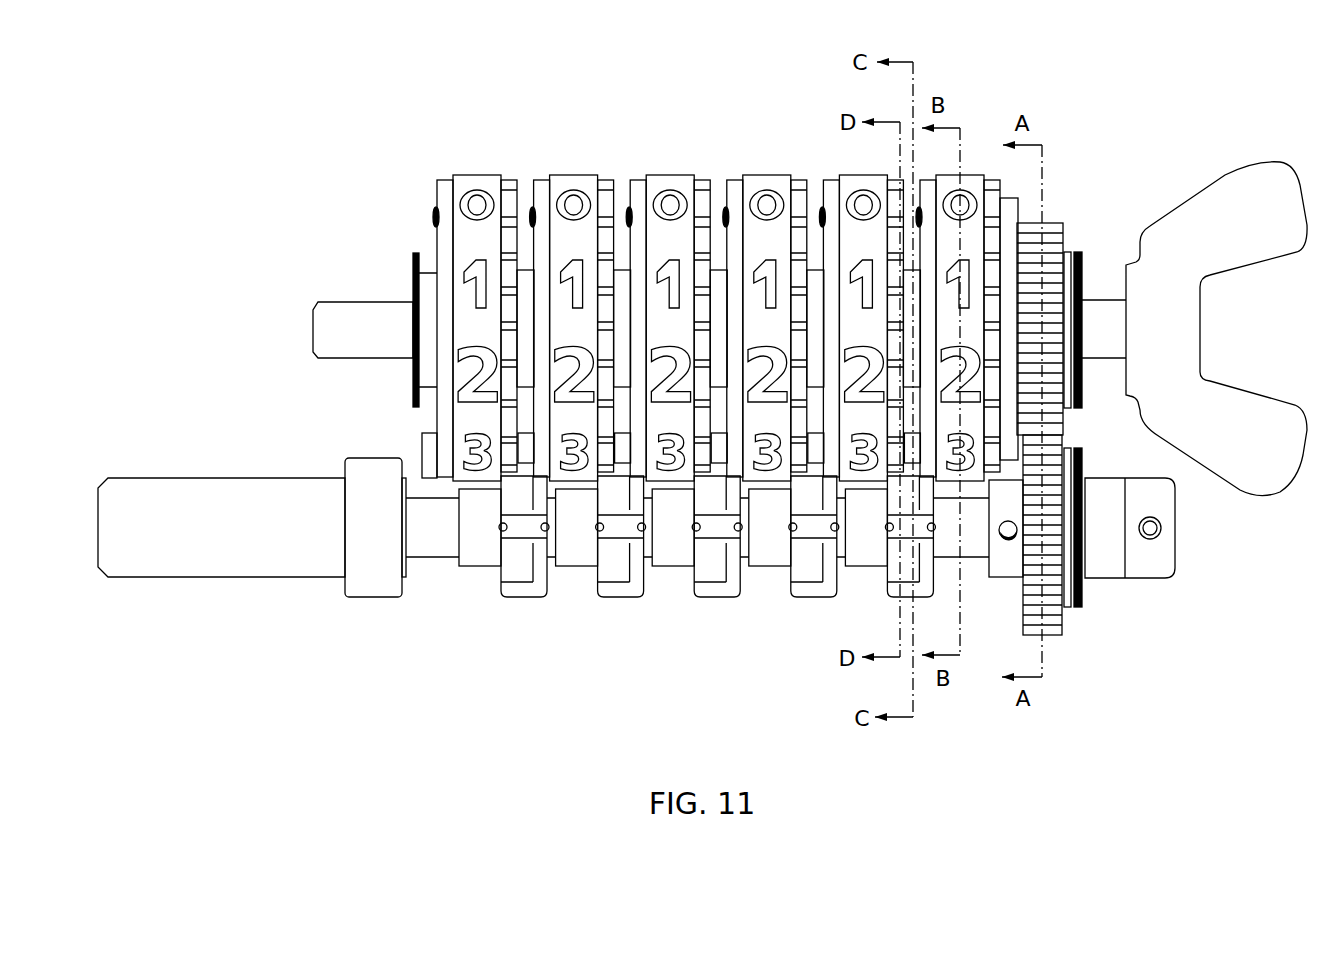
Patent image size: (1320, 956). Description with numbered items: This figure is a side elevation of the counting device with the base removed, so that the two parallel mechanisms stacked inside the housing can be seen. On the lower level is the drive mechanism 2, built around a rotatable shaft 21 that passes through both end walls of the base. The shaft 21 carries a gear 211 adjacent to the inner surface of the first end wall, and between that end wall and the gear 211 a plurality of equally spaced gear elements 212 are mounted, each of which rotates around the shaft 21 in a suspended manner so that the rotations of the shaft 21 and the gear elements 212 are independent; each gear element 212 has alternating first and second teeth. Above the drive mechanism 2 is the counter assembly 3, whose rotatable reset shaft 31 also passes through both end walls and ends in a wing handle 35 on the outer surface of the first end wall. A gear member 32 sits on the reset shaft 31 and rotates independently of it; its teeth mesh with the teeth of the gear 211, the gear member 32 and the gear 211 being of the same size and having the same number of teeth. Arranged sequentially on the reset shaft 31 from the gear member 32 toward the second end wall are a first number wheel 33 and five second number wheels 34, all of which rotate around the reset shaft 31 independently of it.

The drive mechanism 2 is at (305, 620).
The rotatable shaft 21 is at (157, 565).
The gear 211 is at (1003, 570).
The gear elements 212 is at (485, 537).
The counter assembly 3 is at (1078, 215).
The reset shaft 31 is at (342, 322).
The gear member 32 is at (1045, 240).
The first number wheel 33 is at (942, 187).
The second number wheels 34 is at (463, 195).
The wing handle 35 is at (1250, 188).